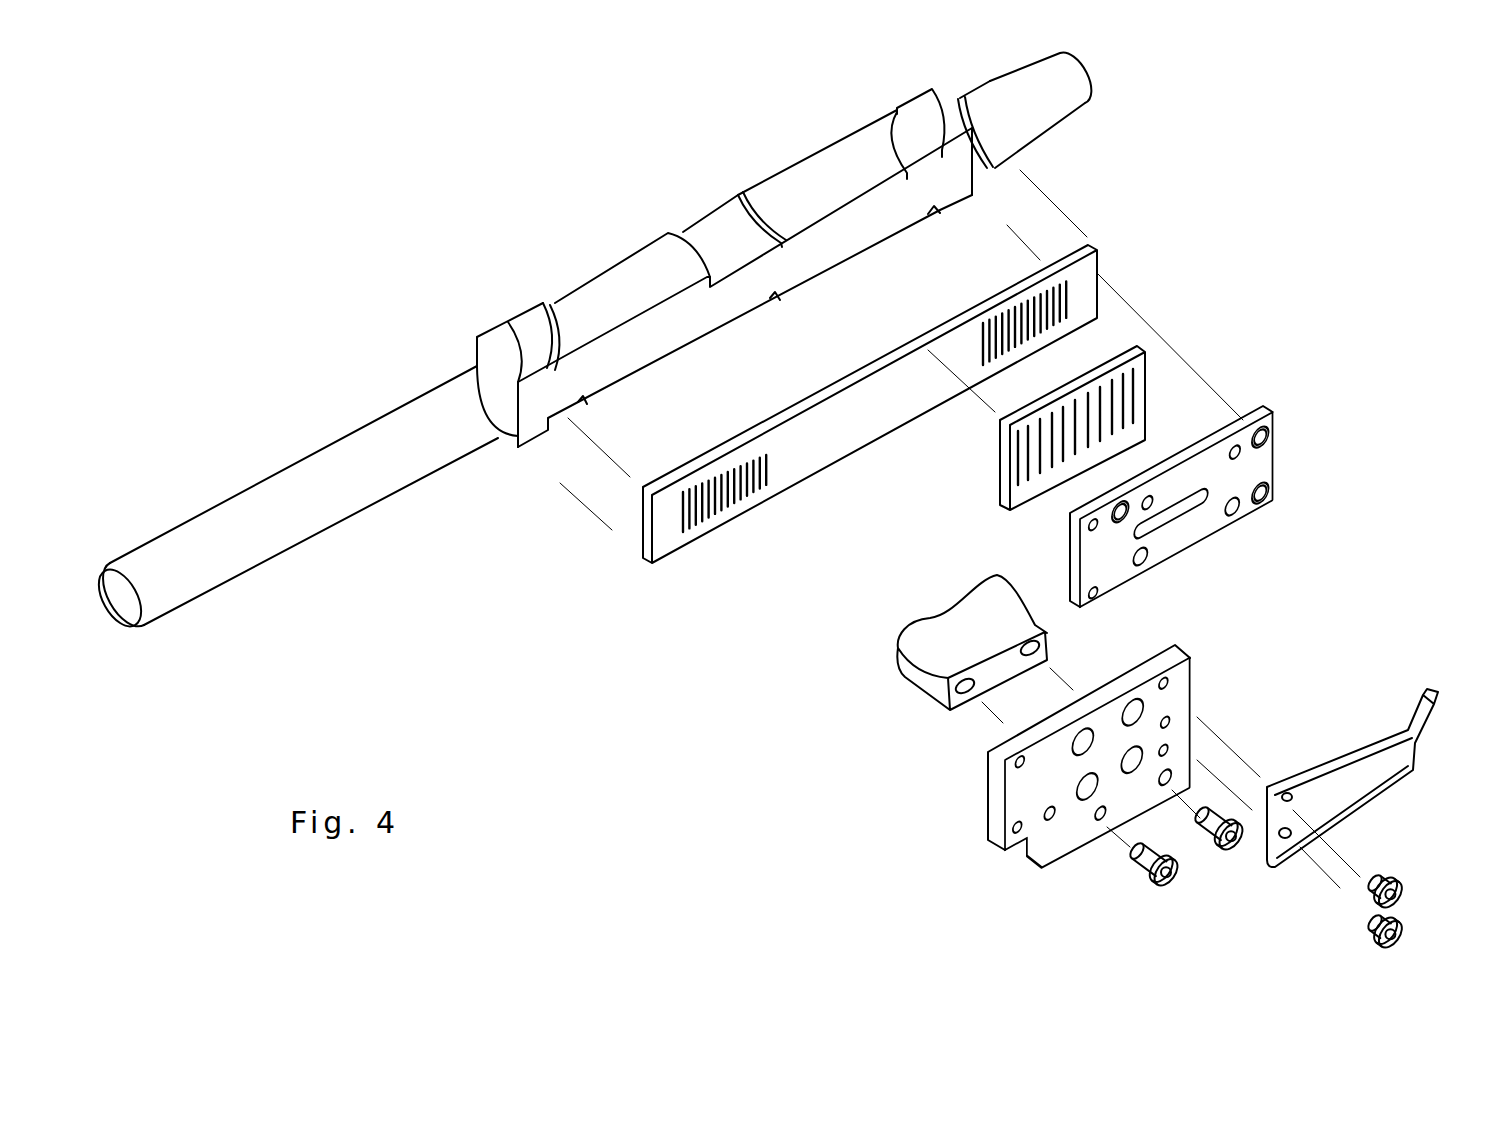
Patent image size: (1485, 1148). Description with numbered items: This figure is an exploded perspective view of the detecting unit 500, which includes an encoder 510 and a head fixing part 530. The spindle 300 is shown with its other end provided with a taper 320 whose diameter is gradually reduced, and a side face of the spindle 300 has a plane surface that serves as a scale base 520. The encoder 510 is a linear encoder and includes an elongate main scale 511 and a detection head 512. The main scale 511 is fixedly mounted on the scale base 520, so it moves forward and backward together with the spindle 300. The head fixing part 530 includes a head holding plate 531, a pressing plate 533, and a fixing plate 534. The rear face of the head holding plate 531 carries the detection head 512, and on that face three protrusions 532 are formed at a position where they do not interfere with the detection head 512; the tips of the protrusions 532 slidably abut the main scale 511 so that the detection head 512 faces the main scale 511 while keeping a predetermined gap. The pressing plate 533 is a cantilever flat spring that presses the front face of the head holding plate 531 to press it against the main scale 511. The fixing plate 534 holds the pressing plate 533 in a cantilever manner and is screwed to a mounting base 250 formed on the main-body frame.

The spindle 300 is at (604, 276).
The taper 320 is at (1067, 103).
The scale base 520 is at (812, 248).
The detecting unit 500 is at (1193, 216).
The encoder 510 is at (894, 408).
The main scale 511 is at (766, 488).
The detection head 512 is at (1000, 496).
The head fixing part 530 is at (1374, 436).
The head holding plate 531 is at (1245, 517).
The protrusions 532 is at (1240, 417).
The pressing plate 533 is at (1400, 758).
The fixing plate 534 is at (1055, 850).
The mounting base 250 is at (908, 676).